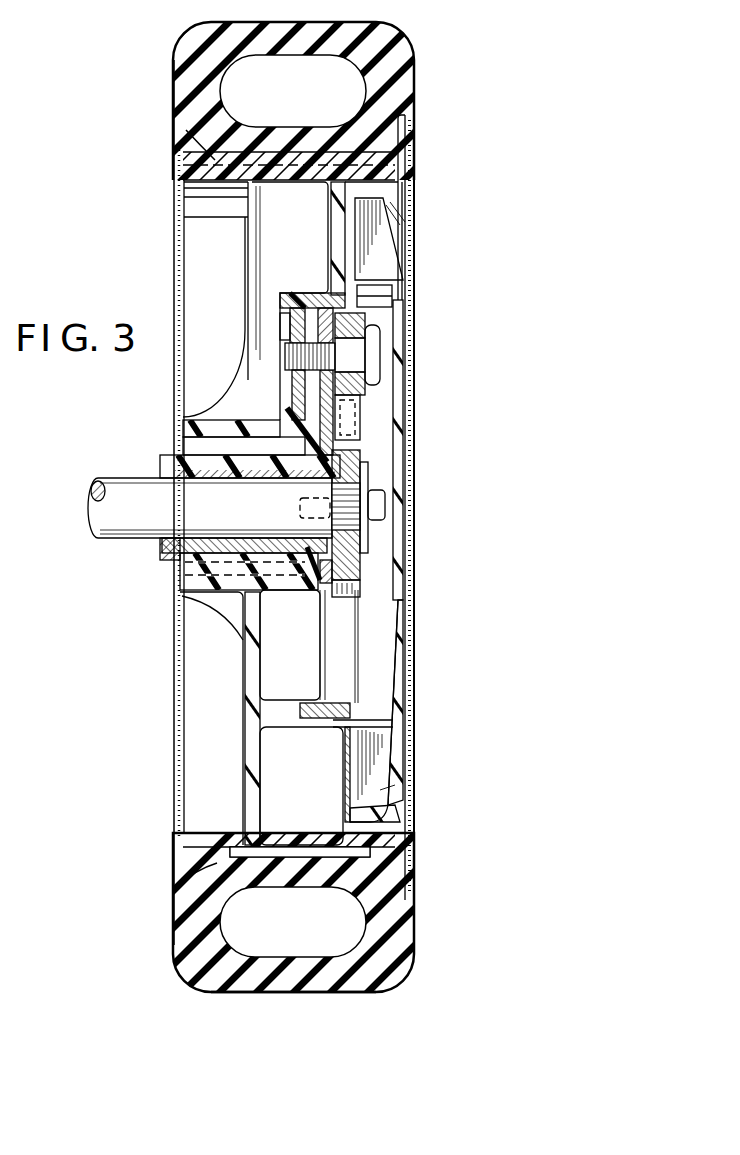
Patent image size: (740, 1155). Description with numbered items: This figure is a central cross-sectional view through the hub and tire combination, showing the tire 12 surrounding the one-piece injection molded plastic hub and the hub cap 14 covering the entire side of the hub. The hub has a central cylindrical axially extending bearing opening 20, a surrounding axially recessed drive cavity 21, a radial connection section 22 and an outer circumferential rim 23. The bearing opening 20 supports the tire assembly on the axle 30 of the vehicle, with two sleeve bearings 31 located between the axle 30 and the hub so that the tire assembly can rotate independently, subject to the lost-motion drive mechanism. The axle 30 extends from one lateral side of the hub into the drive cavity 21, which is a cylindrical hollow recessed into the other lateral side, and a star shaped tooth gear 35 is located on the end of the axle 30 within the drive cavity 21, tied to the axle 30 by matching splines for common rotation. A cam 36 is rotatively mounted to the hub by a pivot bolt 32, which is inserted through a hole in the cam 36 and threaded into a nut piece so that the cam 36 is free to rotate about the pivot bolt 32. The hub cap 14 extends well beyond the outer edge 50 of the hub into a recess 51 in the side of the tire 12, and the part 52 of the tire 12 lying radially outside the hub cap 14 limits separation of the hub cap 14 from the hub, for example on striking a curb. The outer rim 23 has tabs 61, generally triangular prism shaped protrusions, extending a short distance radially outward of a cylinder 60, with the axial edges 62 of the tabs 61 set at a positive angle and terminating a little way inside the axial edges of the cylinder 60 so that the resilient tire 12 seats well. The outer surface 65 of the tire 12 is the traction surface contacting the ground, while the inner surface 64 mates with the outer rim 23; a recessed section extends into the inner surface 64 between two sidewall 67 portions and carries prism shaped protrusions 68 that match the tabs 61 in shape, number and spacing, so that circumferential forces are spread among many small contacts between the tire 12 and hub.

The tire 12 is at (365, 997).
The hub cap 14 is at (410, 653).
The bearing opening 20 is at (167, 548).
The drive cavity 21 is at (298, 661).
The radial connection section 22 is at (304, 254).
The outer circumferential rim 23 is at (212, 185).
The axle 30 is at (93, 522).
The sleeve bearing 31 is at (177, 488).
The pivot bolt 32 is at (378, 377).
The star shaped tooth gear 35 is at (360, 570).
The cam 36 is at (360, 335).
The outer edge 50 is at (405, 160).
The recess 51 is at (413, 136).
The part of the tire 52 is at (414, 84).
The cylinder 60 is at (195, 160).
The tabs 61 is at (305, 135).
The axial edges 62 is at (200, 158).
The inner surface 64 is at (370, 850).
The outer surface 65 is at (290, 995).
The sidewall 67 is at (355, 858).
The protrusions 68 is at (175, 887).